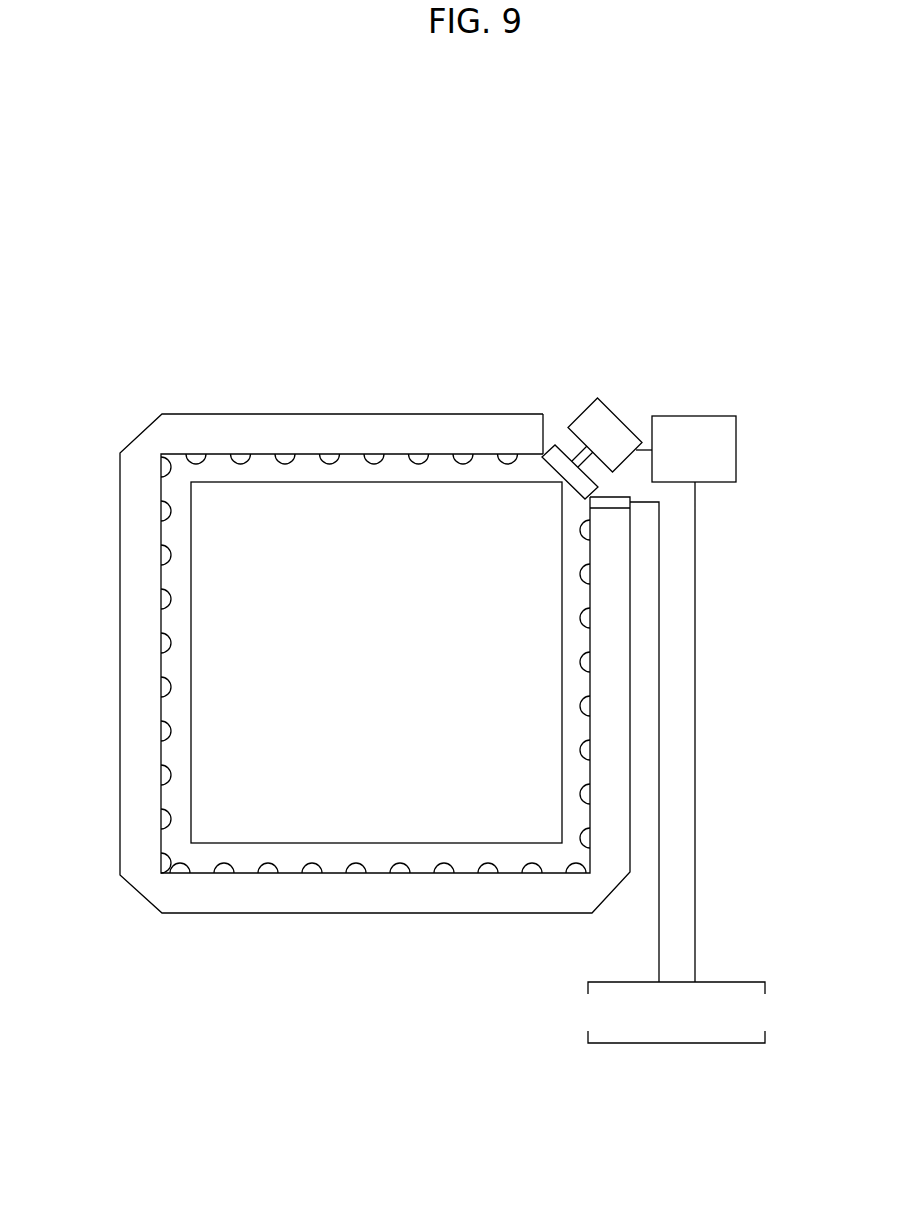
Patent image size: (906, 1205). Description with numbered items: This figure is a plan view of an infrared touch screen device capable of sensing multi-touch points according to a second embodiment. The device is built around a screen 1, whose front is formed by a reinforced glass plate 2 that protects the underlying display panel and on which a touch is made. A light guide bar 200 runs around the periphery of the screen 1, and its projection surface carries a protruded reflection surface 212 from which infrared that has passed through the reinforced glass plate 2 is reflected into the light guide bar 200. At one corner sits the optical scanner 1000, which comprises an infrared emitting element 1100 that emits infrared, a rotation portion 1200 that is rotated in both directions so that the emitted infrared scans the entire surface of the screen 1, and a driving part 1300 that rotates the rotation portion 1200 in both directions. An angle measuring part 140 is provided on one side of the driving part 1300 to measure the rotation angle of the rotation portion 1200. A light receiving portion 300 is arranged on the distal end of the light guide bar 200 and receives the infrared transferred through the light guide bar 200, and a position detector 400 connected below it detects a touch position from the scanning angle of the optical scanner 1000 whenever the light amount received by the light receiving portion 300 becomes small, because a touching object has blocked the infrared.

The screen 1 is at (420, 860).
The reinforced glass plate 2 is at (377, 843).
The angle measuring part 140 is at (695, 417).
The light guide bar 200 is at (110, 600).
The reflection surface 212 is at (161, 687).
The light receiving portion 300 is at (610, 510).
The position detector 400 is at (737, 982).
The optical scanner 1000 is at (633, 318).
The infrared emitting element 1100 is at (553, 482).
The rotation portion 1200 is at (557, 462).
The driving part 1300 is at (617, 418).